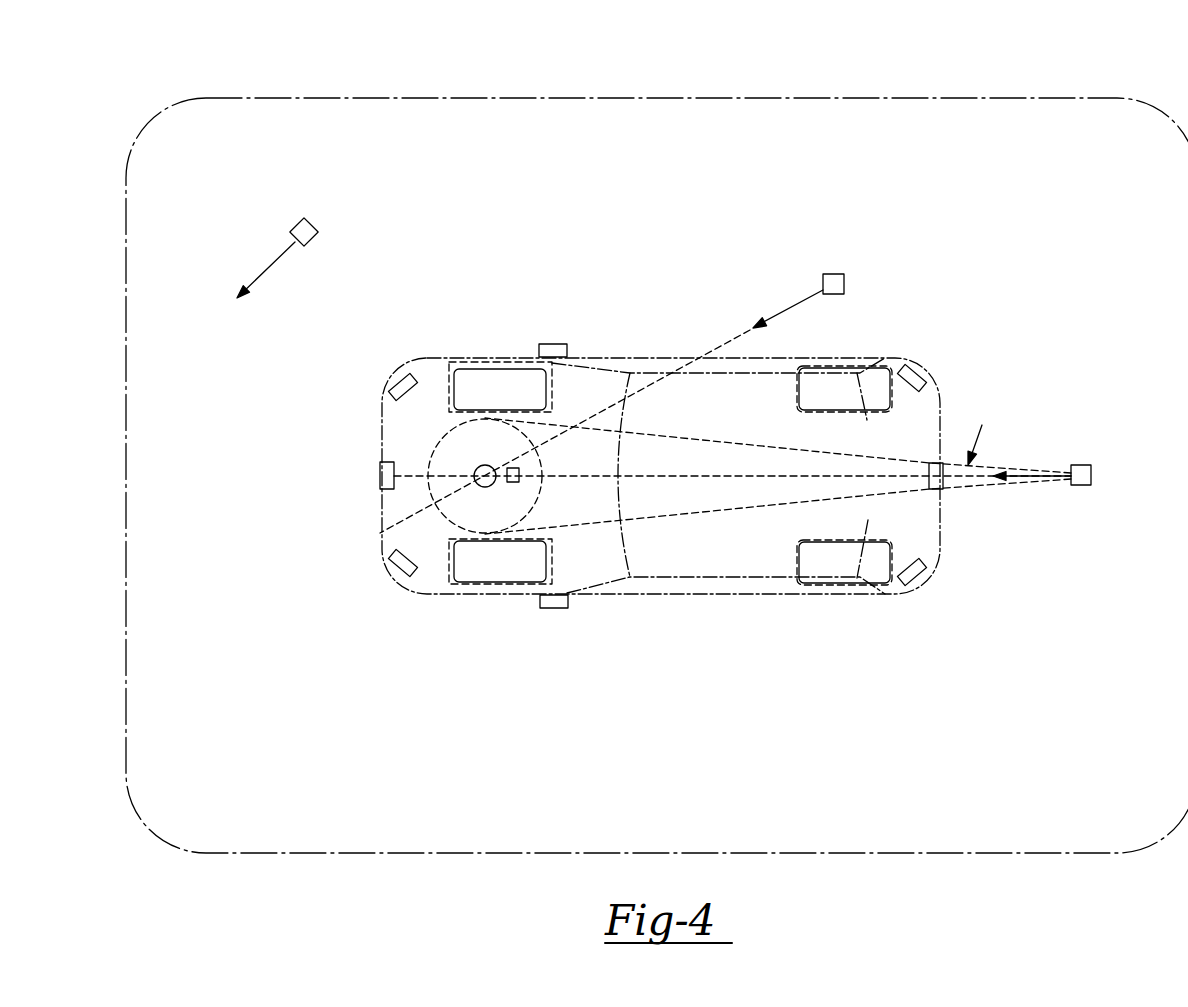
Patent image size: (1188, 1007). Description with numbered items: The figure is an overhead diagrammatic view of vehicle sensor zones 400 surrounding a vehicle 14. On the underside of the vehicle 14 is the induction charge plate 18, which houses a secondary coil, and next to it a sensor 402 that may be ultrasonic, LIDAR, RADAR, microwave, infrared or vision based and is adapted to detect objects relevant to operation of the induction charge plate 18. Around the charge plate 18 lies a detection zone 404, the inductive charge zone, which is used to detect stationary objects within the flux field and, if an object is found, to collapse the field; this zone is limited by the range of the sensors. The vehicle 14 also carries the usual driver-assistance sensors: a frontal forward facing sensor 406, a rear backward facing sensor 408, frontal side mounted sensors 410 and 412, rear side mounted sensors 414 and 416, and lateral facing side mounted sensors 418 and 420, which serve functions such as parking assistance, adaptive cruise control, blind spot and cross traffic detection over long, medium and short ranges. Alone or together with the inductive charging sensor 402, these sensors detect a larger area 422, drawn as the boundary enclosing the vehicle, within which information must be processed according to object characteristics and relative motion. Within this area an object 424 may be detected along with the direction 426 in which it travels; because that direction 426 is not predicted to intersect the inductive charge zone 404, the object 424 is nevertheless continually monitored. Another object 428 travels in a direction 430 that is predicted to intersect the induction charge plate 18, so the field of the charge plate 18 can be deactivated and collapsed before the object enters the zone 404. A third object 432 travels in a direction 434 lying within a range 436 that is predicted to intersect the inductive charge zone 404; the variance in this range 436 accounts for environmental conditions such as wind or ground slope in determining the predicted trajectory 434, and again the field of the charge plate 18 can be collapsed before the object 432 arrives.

The vehicle sensor zones 400 is at (990, 75).
The vehicle 14 is at (730, 578).
The induction charge plate 18 is at (483, 465).
The sensor 402 is at (520, 474).
The detection zone 404 is at (542, 512).
The frontal forward facing sensor 406 is at (380, 474).
The rear backward facing sensor 408 is at (935, 462).
The frontal side mounted sensor 410 is at (401, 378).
The frontal side mounted sensor 412 is at (397, 570).
The rear side mounted sensor 414 is at (916, 369).
The rear side mounted sensor 416 is at (917, 583).
The lateral facing side mounted sensor 418 is at (551, 343).
The lateral facing side mounted sensor 420 is at (551, 608).
The larger area 422 is at (673, 852).
The object 424 is at (297, 226).
The direction 426 is at (278, 266).
The object 428 is at (836, 274).
The direction 430 is at (793, 306).
The object 432 is at (1082, 465).
The direction 434 is at (1018, 478).
The range 436 is at (970, 495).